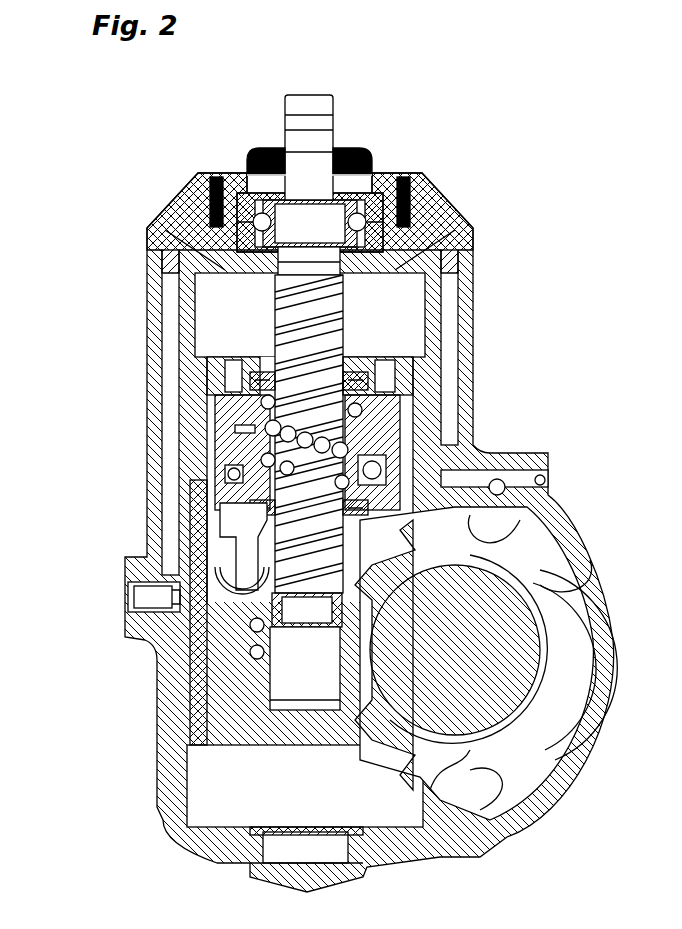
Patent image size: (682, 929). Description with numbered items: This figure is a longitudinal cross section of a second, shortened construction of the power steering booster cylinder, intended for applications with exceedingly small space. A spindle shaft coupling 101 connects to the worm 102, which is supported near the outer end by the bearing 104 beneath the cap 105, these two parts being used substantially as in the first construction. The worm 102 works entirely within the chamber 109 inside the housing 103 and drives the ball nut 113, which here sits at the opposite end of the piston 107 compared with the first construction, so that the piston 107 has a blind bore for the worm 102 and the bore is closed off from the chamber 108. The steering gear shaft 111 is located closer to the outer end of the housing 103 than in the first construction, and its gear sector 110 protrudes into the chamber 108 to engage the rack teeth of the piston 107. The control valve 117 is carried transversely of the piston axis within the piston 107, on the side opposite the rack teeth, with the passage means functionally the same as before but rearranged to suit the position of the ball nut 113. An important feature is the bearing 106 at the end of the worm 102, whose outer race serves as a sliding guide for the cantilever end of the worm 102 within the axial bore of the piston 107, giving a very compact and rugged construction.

The spindle shaft coupling 101 is at (328, 147).
The worm 102 is at (312, 322).
The housing 103 is at (465, 353).
The bearing 104 is at (373, 176).
The cap 105 is at (428, 187).
The bearing 106 is at (243, 627).
The piston 107 is at (238, 680).
The chamber 108 is at (212, 765).
The chamber 109 is at (235, 332).
The gear sector 110 is at (440, 568).
The steering gear shaft 111 is at (503, 575).
The ball nut 113 is at (373, 415).
The control valve 117 is at (103, 520).